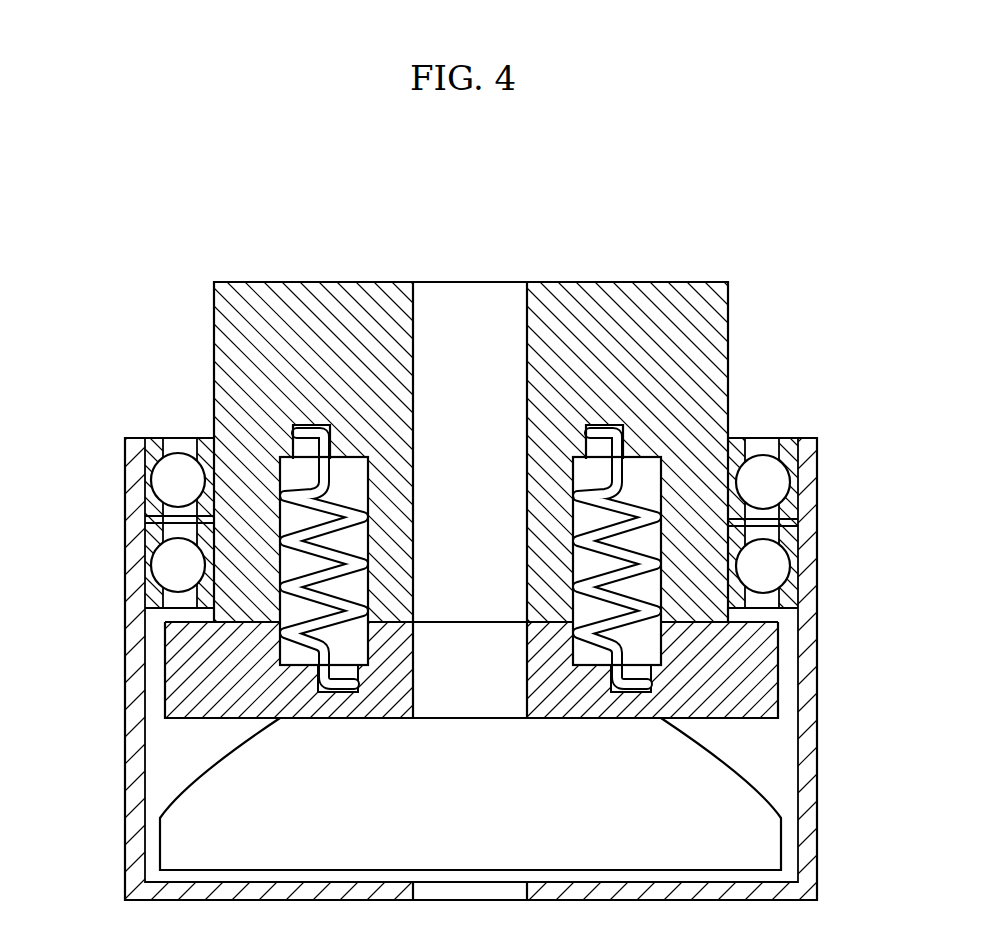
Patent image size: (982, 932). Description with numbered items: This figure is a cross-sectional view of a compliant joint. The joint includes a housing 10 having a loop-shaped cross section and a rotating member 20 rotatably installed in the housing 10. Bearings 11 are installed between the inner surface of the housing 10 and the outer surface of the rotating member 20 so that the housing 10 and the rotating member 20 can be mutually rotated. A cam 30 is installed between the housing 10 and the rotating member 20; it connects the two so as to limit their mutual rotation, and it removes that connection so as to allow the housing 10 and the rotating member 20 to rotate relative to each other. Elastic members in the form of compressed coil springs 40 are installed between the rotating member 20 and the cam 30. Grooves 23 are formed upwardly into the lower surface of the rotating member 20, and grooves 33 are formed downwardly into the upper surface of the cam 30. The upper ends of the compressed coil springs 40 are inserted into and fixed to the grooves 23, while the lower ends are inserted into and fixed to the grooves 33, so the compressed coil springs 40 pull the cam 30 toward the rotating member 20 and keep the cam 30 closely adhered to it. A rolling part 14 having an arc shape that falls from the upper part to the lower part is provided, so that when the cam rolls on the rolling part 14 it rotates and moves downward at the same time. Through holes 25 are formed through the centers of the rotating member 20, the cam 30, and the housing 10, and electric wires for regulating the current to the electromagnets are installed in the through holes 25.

The housing 10 is at (810, 463).
The bearings 11 is at (177, 478).
The rolling part 14 is at (722, 762).
The rotating member 20 is at (717, 348).
The grooves 23 is at (280, 528).
The through holes 25 is at (443, 316).
The cam 30 is at (761, 675).
The grooves 33 is at (290, 641).
The compressed coil springs 40 is at (648, 567).